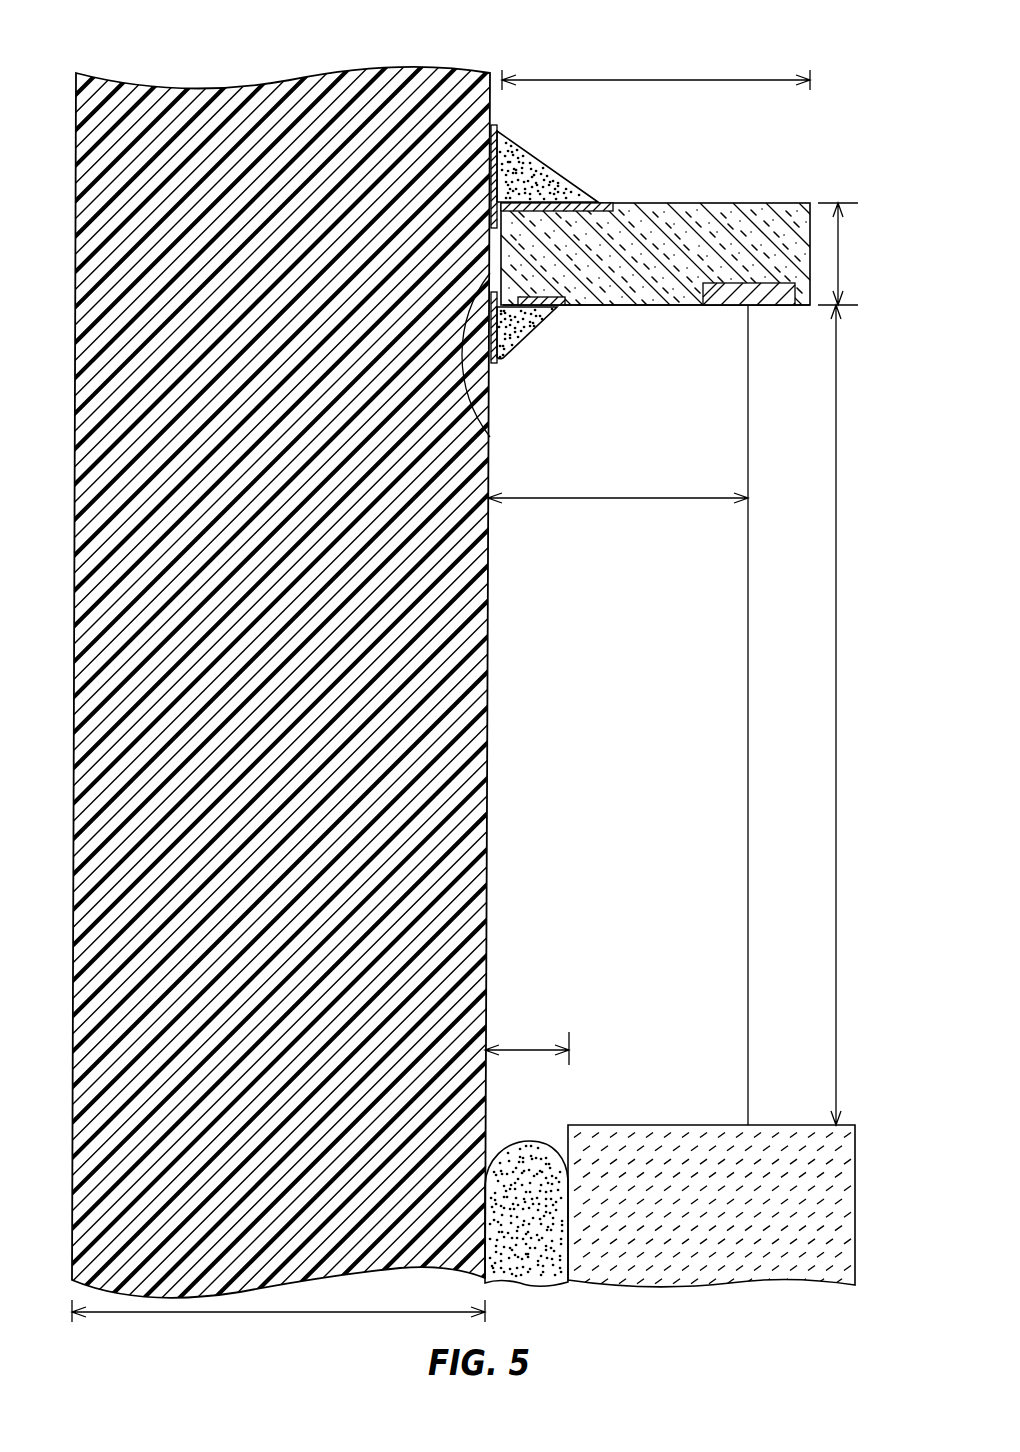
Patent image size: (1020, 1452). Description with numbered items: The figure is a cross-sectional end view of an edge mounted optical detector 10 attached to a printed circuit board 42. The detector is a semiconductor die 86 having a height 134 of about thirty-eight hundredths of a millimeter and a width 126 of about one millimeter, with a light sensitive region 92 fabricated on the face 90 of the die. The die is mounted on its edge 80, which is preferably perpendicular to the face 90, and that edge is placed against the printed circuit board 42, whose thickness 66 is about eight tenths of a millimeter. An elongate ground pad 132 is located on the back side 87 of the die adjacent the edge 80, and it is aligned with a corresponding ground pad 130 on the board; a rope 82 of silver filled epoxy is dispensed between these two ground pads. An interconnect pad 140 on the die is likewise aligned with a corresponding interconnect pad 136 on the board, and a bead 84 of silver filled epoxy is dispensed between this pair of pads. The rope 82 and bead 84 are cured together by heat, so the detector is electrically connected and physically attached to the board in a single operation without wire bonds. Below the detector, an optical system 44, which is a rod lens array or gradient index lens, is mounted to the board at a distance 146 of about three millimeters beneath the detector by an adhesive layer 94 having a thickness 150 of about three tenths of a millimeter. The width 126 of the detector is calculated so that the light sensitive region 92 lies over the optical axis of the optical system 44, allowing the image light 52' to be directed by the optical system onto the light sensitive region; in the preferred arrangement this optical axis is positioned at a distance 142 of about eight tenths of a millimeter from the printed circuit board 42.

The edge mounted optical detector 10 is at (830, 167).
The printed circuit board 42 is at (490, 663).
The optical system 44 is at (615, 1125).
The image light 52' is at (714, 715).
The thickness 66 is at (263, 1312).
The edge 80 is at (490, 433).
The rope of silver filled epoxy 82 is at (550, 168).
The bead of silver filled epoxy 84 is at (528, 338).
The semiconductor die 86 is at (760, 203).
The back side 87 is at (688, 203).
The face 90 is at (657, 307).
The light sensitive region 92 is at (775, 308).
The adhesive layer 94 is at (530, 1143).
The width 126 is at (647, 80).
The ground pad 130 is at (497, 128).
The elongate ground pad 132 is at (607, 203).
The height 134 is at (838, 268).
The interconnect pad 136 is at (497, 362).
The interconnect pad 140 is at (553, 306).
The distance 142 is at (598, 500).
The distance 146 is at (836, 710).
The thickness 150 is at (527, 1048).